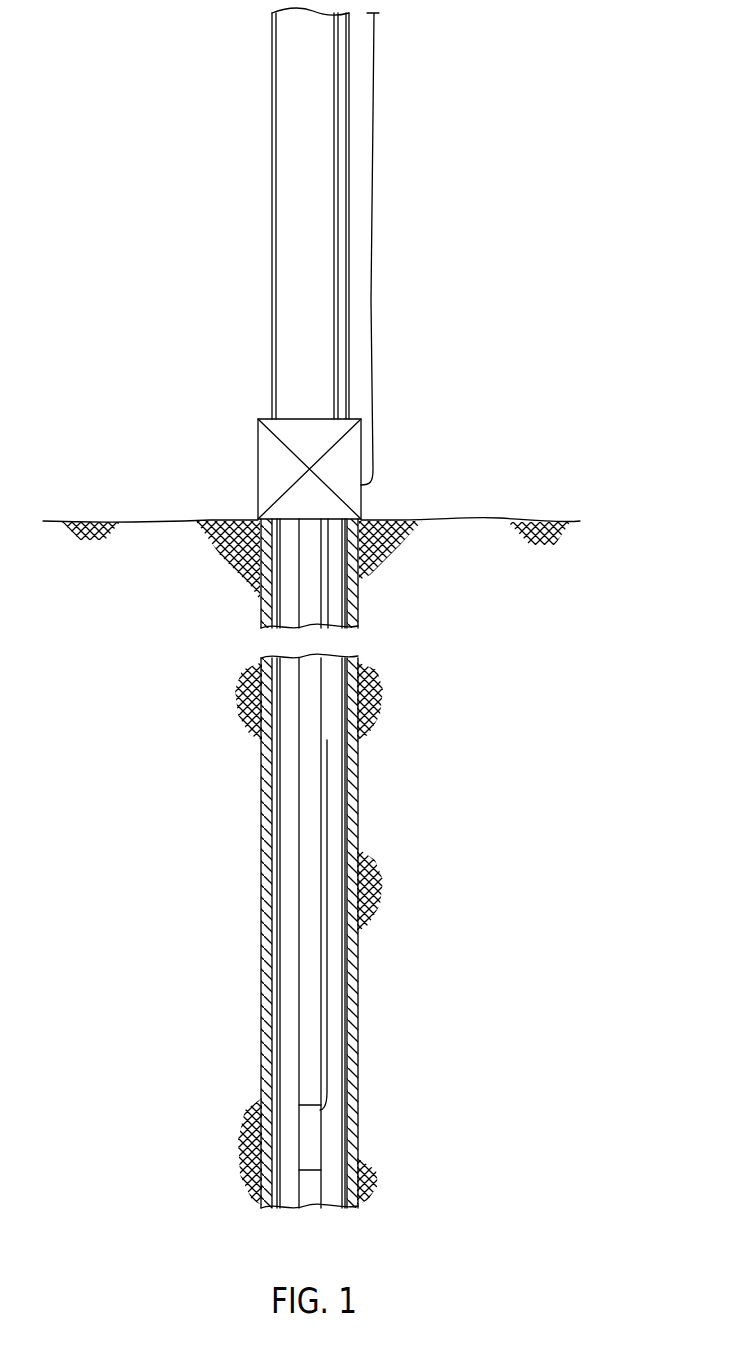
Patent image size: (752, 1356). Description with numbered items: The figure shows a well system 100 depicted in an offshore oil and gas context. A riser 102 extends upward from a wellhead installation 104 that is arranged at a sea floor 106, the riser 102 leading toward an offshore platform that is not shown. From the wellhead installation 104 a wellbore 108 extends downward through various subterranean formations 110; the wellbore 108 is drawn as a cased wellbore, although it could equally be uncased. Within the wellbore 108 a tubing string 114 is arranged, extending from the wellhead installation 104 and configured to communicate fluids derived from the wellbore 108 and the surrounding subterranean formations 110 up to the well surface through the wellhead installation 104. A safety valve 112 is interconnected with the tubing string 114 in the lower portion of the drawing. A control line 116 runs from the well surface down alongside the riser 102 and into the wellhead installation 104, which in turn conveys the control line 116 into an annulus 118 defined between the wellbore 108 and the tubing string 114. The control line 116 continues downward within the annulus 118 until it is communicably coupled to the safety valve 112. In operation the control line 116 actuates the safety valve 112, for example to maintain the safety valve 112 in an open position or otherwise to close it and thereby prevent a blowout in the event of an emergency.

The well system 100 is at (568, 351).
The riser 102 is at (271, 227).
The wellhead installation 104 is at (258, 472).
The sea floor 106 is at (455, 520).
The wellbore 108 is at (261, 590).
The subterranean formations 110 is at (422, 741).
The safety valve 112 is at (320, 1145).
The tubing string 114 is at (300, 810).
The control line 116 is at (373, 115).
The annulus 118 is at (287, 996).